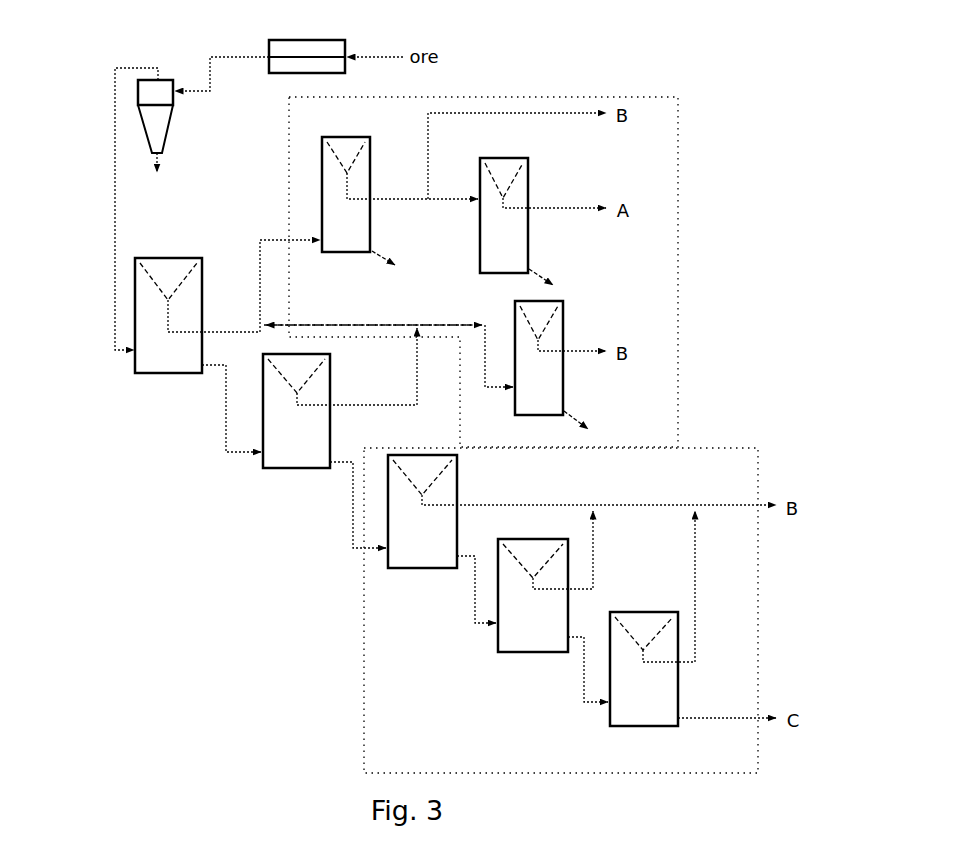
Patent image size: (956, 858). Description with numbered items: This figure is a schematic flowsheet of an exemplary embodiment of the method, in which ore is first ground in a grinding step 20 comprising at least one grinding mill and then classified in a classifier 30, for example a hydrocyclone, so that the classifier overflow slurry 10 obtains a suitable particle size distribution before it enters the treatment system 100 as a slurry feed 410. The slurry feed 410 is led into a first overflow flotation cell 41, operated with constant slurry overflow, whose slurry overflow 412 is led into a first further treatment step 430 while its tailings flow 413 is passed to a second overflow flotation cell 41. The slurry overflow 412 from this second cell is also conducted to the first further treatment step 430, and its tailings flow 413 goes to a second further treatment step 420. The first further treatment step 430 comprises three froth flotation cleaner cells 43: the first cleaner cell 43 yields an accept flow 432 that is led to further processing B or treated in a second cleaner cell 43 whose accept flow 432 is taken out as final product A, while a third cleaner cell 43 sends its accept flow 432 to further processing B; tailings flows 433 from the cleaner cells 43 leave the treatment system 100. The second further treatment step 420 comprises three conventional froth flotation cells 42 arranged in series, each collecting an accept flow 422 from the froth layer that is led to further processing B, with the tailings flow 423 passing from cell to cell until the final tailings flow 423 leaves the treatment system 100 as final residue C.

The slurry 10 is at (115, 232).
The grinding step 20 is at (314, 40).
The classifier 30 is at (173, 107).
The treatment system 100 is at (734, 322).
The overflow flotation cell 41 is at (150, 375).
The froth flotation cell 42 is at (414, 570).
The cleaner cell 43 is at (330, 253).
The slurry feed 410 is at (128, 353).
The slurry overflow 412 is at (235, 331).
The tailings flow 413 is at (226, 399).
The second further treatment step 420 is at (760, 585).
The accept flow 422 is at (476, 504).
The tailings flow 423 is at (473, 573).
The first further treatment step 430 is at (680, 136).
The accept flow 432 is at (396, 198).
The tailings flow 433 is at (376, 255).